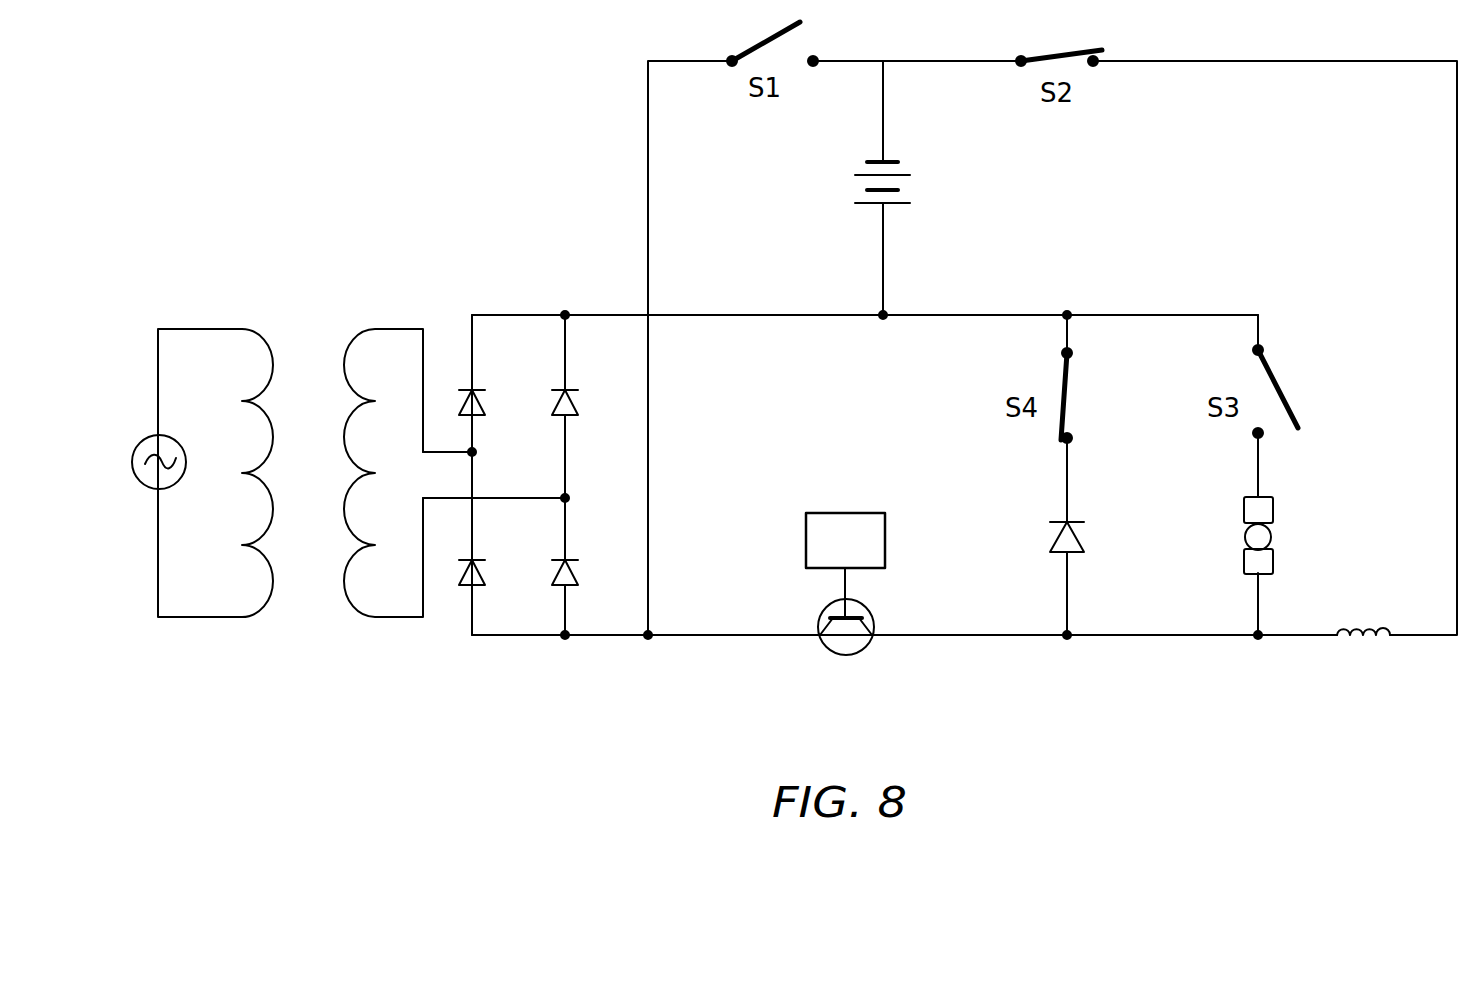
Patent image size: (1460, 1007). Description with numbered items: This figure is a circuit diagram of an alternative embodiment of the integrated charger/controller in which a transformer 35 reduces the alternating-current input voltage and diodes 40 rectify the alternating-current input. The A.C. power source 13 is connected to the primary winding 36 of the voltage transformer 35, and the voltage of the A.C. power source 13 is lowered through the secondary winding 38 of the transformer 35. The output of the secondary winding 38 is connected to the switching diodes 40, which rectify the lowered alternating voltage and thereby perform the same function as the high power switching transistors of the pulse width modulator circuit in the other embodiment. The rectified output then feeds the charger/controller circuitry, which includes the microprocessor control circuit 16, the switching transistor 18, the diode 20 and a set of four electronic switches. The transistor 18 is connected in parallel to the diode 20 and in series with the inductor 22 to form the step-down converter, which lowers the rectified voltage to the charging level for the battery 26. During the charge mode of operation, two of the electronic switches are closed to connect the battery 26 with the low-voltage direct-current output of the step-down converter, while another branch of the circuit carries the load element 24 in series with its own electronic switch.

The A.C. power source 13 is at (178, 450).
The microprocessor control circuit 16 is at (850, 513).
The switching transistor 18 is at (840, 655).
The diode 20 is at (1055, 548).
The inductor 22 is at (1362, 637).
The lamp 24 is at (1272, 530).
The battery 26 is at (912, 167).
The transformer 35 is at (290, 456).
The primary winding 36 is at (265, 603).
The secondary winding 38 is at (362, 615).
The switching diodes 40 is at (487, 578).